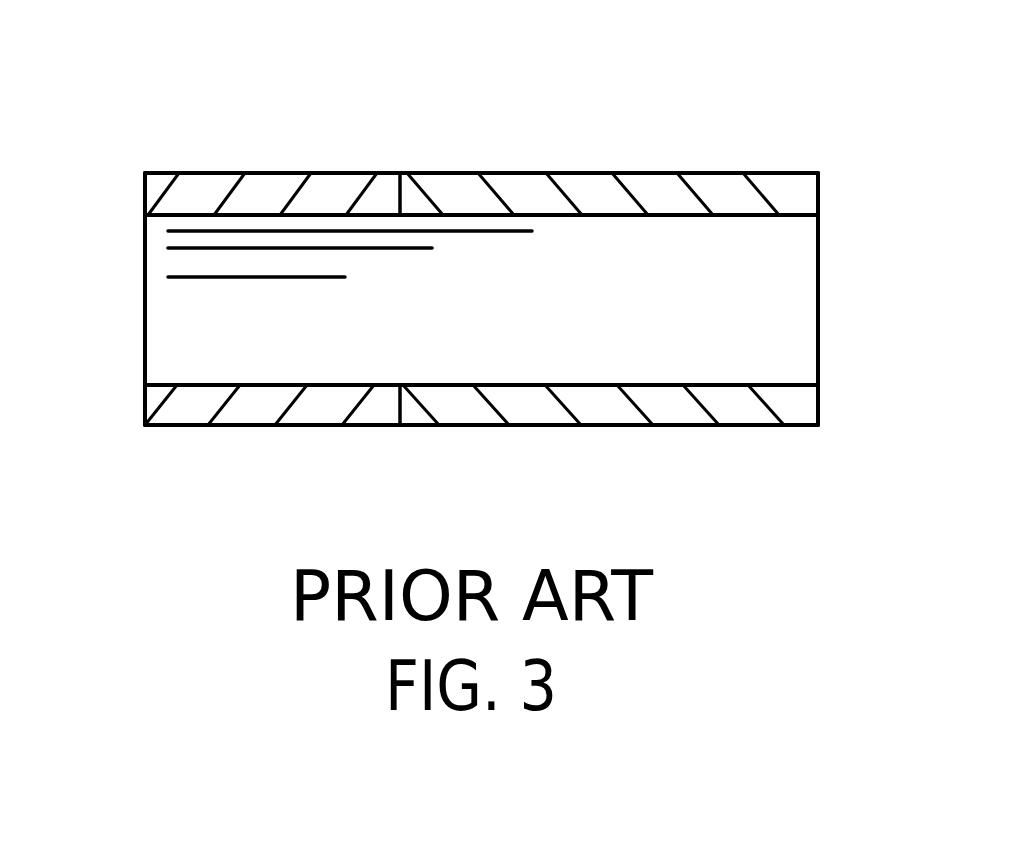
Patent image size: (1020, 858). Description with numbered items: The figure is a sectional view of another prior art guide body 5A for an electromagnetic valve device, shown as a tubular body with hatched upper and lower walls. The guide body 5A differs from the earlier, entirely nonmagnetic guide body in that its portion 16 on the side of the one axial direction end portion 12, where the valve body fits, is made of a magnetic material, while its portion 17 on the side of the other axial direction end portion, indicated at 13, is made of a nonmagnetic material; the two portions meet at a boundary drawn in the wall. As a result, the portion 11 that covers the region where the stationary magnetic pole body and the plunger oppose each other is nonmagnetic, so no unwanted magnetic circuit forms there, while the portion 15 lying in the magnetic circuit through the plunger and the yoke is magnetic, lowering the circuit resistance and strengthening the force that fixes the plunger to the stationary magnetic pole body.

The guide body 5A is at (562, 147).
The portion covering the opposing portion 11 is at (362, 173).
The one axial direction end portion 12 is at (803, 206).
The left end wall 13 is at (173, 196).
The portion positioned in the magnetic circuit 15 is at (673, 190).
The portion made of a magnetic material 16 is at (750, 197).
The portion made of a nonmagnetic material 17 is at (288, 173).